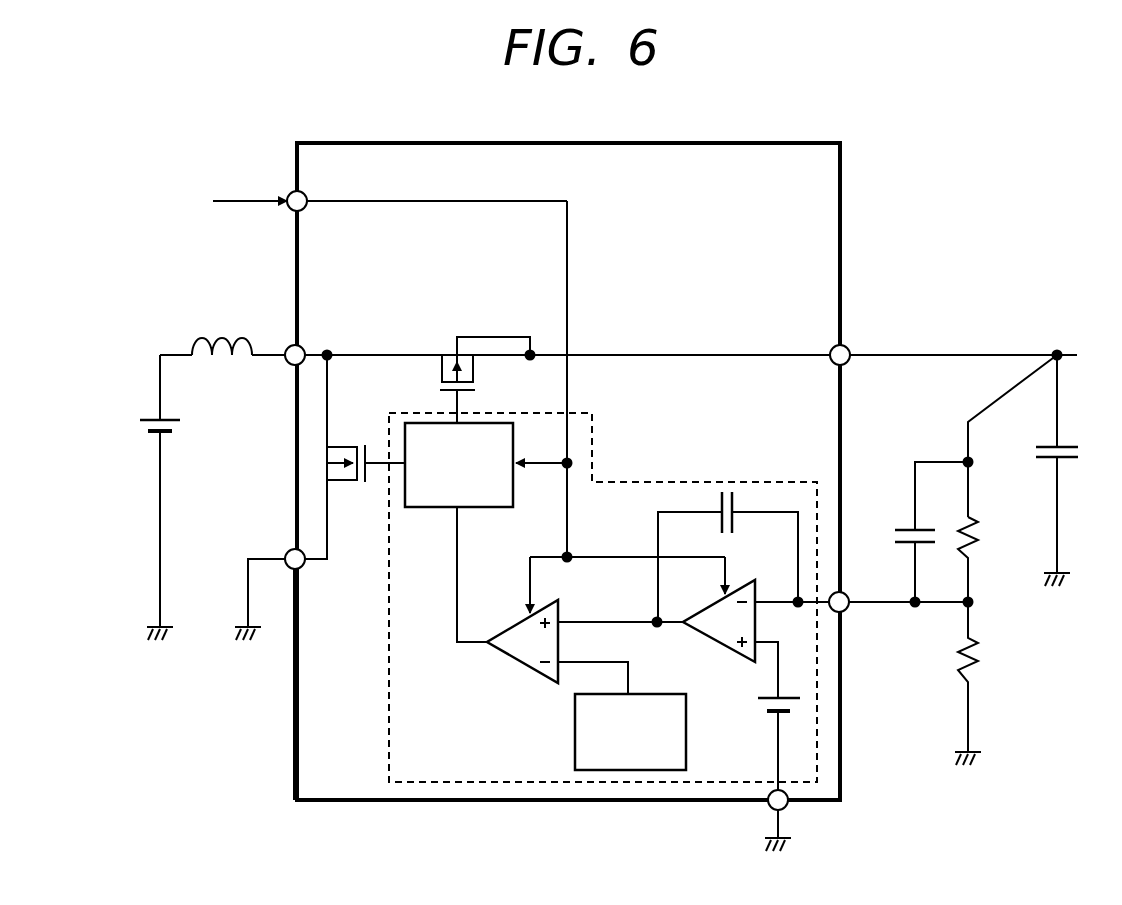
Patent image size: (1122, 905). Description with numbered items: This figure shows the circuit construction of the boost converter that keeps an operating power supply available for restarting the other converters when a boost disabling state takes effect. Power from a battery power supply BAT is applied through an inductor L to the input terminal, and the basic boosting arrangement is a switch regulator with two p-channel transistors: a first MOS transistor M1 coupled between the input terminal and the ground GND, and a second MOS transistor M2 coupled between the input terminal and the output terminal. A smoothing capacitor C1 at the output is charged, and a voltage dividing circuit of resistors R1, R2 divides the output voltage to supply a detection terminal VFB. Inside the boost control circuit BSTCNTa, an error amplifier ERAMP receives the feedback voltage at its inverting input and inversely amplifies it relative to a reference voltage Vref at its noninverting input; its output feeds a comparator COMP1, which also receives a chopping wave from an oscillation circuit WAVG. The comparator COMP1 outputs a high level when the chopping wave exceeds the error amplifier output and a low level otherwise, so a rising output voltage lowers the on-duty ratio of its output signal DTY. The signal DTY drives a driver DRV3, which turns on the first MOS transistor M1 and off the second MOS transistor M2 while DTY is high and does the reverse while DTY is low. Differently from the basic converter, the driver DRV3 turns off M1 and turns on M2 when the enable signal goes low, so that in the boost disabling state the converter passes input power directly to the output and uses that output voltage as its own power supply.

The battery power supply BAT is at (150, 410).
The ground GND is at (584, 751).
The inductor L is at (218, 335).
The first MOS transistor M1 is at (348, 447).
The second MOS transistor M2 is at (478, 372).
The driver DRV3 is at (459, 465).
The boost control circuit BSTCNTa is at (630, 482).
The output signal DTY is at (457, 583).
The comparator COMP1 is at (518, 663).
The oscillation circuit WAVG is at (575, 738).
The error amplifier ERAMP is at (718, 639).
The reference voltage Vref is at (800, 708).
The detection terminal VFB is at (847, 611).
The smoothing capacitor C1 is at (1075, 470).
The resistor R1 is at (976, 478).
The resistor R2 is at (983, 683).